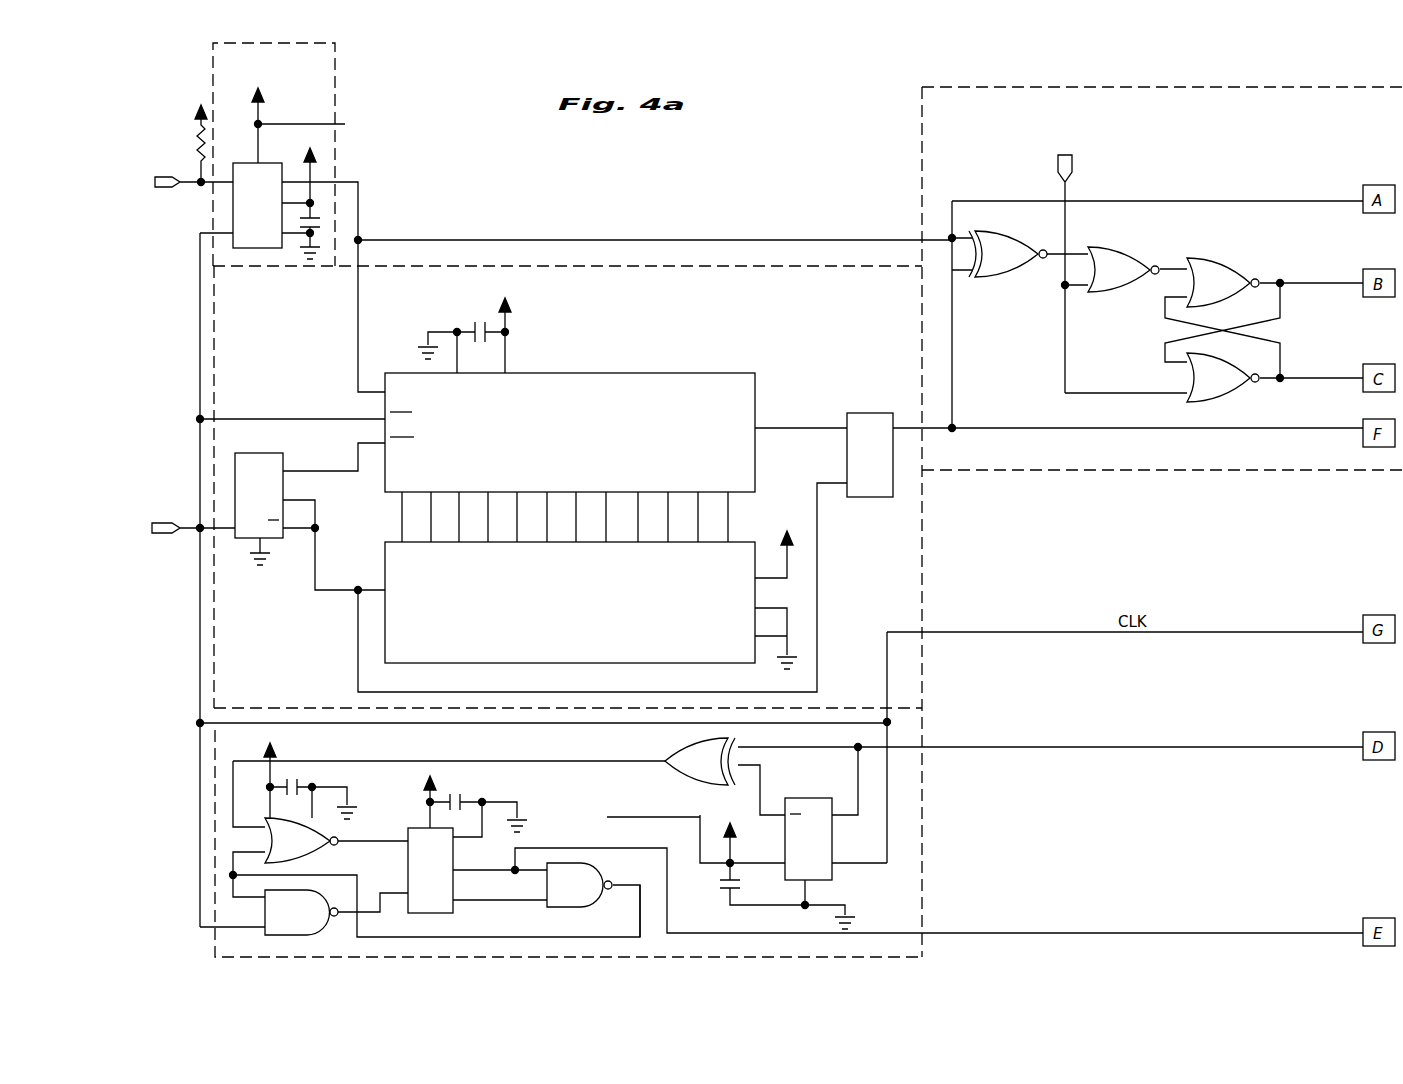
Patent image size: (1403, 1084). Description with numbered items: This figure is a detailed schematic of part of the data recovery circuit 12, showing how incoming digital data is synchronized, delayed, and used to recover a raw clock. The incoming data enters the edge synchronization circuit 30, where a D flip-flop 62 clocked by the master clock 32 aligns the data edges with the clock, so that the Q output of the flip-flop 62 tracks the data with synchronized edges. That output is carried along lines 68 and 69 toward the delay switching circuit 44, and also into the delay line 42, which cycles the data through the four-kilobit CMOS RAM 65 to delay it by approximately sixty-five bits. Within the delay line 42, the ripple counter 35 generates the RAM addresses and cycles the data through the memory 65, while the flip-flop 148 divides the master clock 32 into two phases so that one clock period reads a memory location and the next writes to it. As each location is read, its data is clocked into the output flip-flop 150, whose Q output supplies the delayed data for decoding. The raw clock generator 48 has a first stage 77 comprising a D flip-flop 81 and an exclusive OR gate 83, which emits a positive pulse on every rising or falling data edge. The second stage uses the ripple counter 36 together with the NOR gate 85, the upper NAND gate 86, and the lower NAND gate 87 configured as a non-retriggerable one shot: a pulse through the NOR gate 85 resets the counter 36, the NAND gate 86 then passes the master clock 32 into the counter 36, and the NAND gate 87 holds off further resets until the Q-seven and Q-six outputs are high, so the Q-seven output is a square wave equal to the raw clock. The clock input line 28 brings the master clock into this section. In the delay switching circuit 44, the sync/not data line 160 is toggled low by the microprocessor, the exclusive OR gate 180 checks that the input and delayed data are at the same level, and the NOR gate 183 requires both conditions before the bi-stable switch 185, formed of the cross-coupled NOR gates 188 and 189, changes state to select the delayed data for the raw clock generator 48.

The edge synchronization circuit 30 is at (223, 154).
The D flip-flop 62 is at (227, 205).
The delay line 42 is at (705, 522).
The line 68 is at (765, 240).
The 4K CMOS RAM 65 is at (494, 437).
The ripple counter 35 is at (502, 613).
The flip-flop 148 is at (265, 453).
The output flip-flop 150 is at (865, 497).
The master clock 32 is at (177, 546).
The data recovery circuit 12 is at (154, 789).
The raw clock generator 48 is at (725, 794).
The first stage 77 is at (896, 736).
The NOR gate 85 is at (300, 858).
The upper NAND gate 86 is at (255, 914).
The clock input line 28 is at (185, 890).
The ripple counter 36 is at (408, 858).
The lower NAND gate 87 is at (575, 907).
The exclusive OR gate 83 is at (668, 777).
The D flip-flop 81 is at (835, 875).
The delay switching circuit 44 is at (1110, 278).
The sync/not data line 160 is at (1068, 187).
The line 69 is at (1165, 201).
The exclusive OR gate 180 is at (1000, 278).
The NOR gate 183 is at (1120, 292).
The bi-stable switch 185 is at (1214, 291).
The NOR gate 188 is at (1230, 258).
The NOR gate 189 is at (1220, 402).